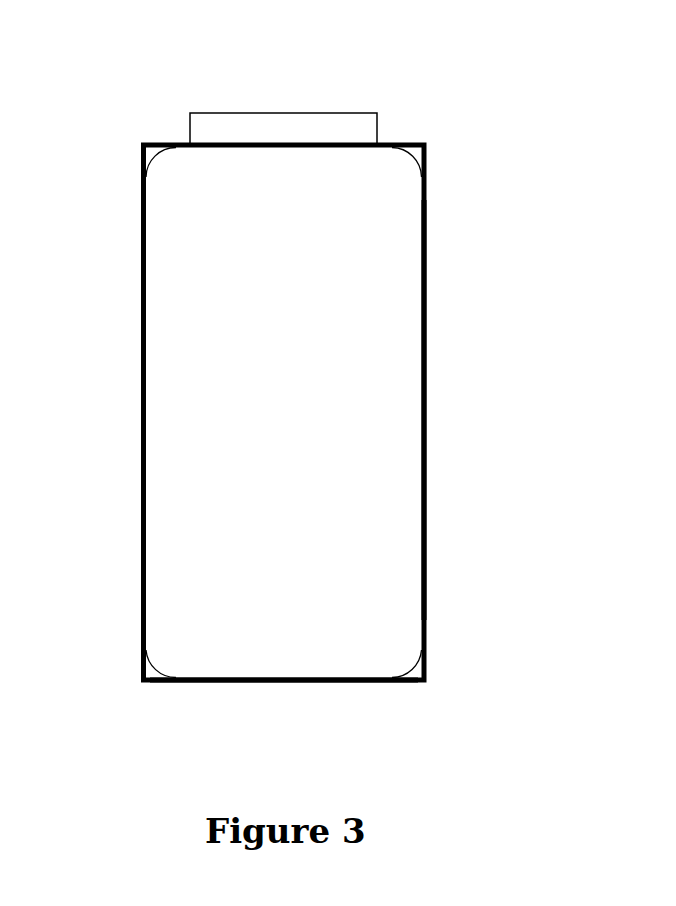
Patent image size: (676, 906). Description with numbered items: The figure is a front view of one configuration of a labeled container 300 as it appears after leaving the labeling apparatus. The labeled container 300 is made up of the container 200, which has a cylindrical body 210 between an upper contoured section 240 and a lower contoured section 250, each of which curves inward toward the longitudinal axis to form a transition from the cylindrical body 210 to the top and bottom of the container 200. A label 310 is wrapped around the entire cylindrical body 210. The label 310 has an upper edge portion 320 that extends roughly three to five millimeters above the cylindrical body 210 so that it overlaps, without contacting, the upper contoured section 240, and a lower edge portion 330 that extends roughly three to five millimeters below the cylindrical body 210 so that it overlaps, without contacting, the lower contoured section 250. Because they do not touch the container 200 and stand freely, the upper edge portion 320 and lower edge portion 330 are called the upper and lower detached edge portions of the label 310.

The labeled container 300 is at (478, 95).
The container 200 is at (290, 324).
The cylindrical body 210 is at (422, 386).
The label 310 is at (140, 435).
The upper contoured section 240 is at (408, 162).
The lower contoured section 250 is at (410, 672).
The upper detached edge portion 320 is at (440, 145).
The lower detached edge portion 330 is at (440, 645).